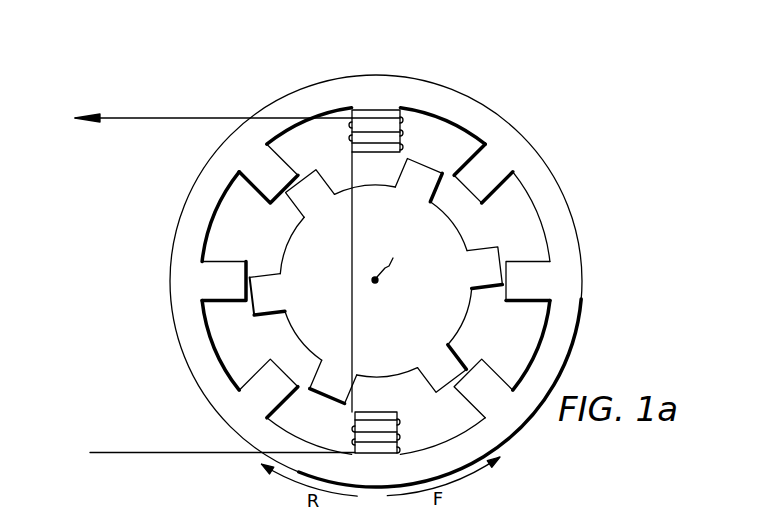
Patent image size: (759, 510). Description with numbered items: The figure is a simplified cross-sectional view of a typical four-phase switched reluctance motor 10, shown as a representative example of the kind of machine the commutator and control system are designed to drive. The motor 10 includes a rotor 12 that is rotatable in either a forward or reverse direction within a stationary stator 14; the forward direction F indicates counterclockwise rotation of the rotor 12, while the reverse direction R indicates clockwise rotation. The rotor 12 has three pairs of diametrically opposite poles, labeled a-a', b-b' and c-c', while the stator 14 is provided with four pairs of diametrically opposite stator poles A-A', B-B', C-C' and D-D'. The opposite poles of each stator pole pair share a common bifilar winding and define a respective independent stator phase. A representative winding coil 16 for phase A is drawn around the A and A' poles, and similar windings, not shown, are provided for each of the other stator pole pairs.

The switched reluctance motor 10 is at (646, 279).
The rotor 12 is at (452, 249).
The stator 14 is at (557, 179).
The winding coil 16 is at (401, 131).